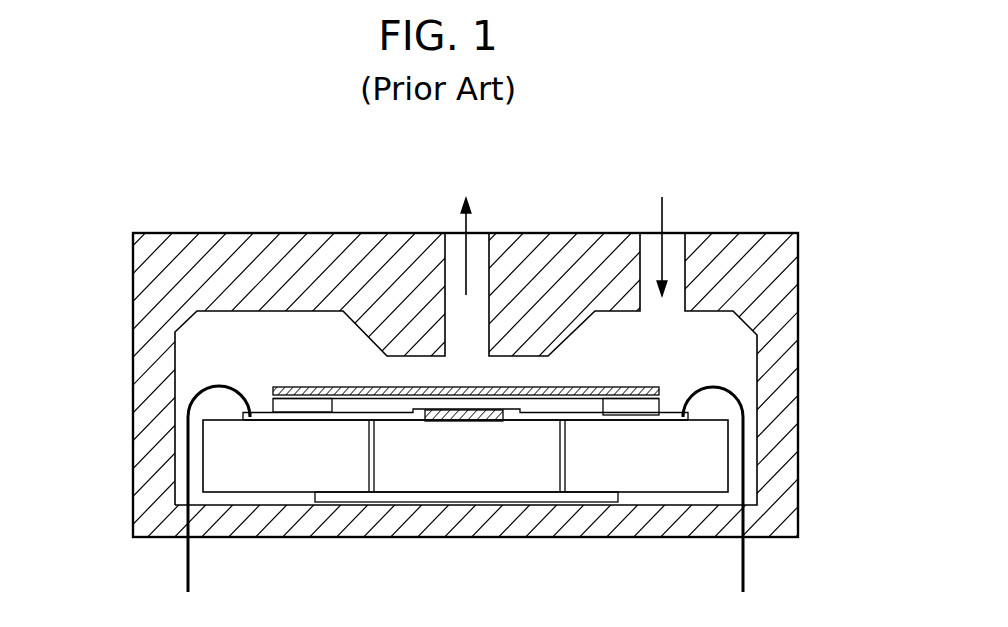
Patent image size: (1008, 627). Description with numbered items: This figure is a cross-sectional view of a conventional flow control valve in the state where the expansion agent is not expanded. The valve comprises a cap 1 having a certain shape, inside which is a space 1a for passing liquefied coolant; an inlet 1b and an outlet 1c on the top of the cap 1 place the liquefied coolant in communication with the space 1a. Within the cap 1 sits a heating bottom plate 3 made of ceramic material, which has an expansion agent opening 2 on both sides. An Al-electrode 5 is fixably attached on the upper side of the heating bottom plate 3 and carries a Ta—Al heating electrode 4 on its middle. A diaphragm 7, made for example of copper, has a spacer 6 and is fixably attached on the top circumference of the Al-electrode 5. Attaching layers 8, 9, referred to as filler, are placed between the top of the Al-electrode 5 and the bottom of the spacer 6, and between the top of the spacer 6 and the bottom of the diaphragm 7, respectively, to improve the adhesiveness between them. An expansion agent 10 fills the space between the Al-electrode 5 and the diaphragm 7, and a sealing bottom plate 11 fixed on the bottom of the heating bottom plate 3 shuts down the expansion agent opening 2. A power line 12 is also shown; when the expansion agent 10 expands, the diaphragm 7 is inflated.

The cap 1 is at (232, 245).
The space 1a is at (210, 344).
The inlet 1b is at (681, 250).
The outlet 1c is at (479, 258).
The expansion agent opening 2 is at (368, 478).
The heating bottom plate 3 is at (697, 488).
The Ta—Al heating electrode 4 is at (483, 422).
The Al-electrode 5 is at (530, 418).
The spacer 6 is at (653, 404).
The diaphragm 7 is at (583, 394).
The attaching layer 8 is at (632, 422).
The attaching layer 9 is at (670, 397).
The expansion agent 10 is at (355, 405).
The sealing bottom plate 11 is at (427, 498).
The power line 12 is at (186, 567).